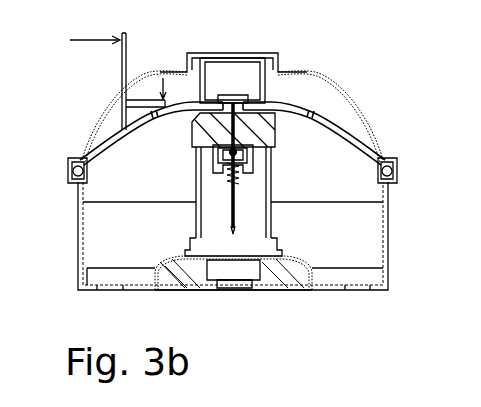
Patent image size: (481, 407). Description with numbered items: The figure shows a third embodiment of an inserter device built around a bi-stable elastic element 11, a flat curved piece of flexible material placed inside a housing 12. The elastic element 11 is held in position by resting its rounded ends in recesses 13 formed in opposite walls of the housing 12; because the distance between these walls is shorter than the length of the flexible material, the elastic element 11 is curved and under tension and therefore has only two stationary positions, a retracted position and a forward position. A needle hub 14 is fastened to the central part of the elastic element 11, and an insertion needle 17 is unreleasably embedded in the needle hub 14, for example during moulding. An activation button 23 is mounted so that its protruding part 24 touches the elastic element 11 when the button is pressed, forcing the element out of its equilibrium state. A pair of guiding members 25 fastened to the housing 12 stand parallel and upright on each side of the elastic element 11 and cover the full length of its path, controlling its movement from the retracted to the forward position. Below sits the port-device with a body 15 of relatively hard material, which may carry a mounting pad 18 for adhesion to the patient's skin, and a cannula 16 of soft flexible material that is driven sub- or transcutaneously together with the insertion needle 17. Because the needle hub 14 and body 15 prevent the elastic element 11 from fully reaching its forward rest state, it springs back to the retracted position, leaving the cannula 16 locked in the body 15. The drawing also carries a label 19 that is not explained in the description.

The bi-stable elastic element 11 is at (138, 132).
The housing 12 is at (77, 222).
The recesses 13 is at (76, 163).
The needle hub 14 is at (255, 123).
The body 15 is at (293, 273).
The cannula 16 is at (236, 195).
The insertion needle 17 is at (233, 229).
The mounting pad 18 is at (187, 292).
The bottom plate 19 is at (234, 306).
The activation button 23 is at (120, 80).
The protruding part 24 is at (145, 105).
The guiding members 25 is at (233, 78).